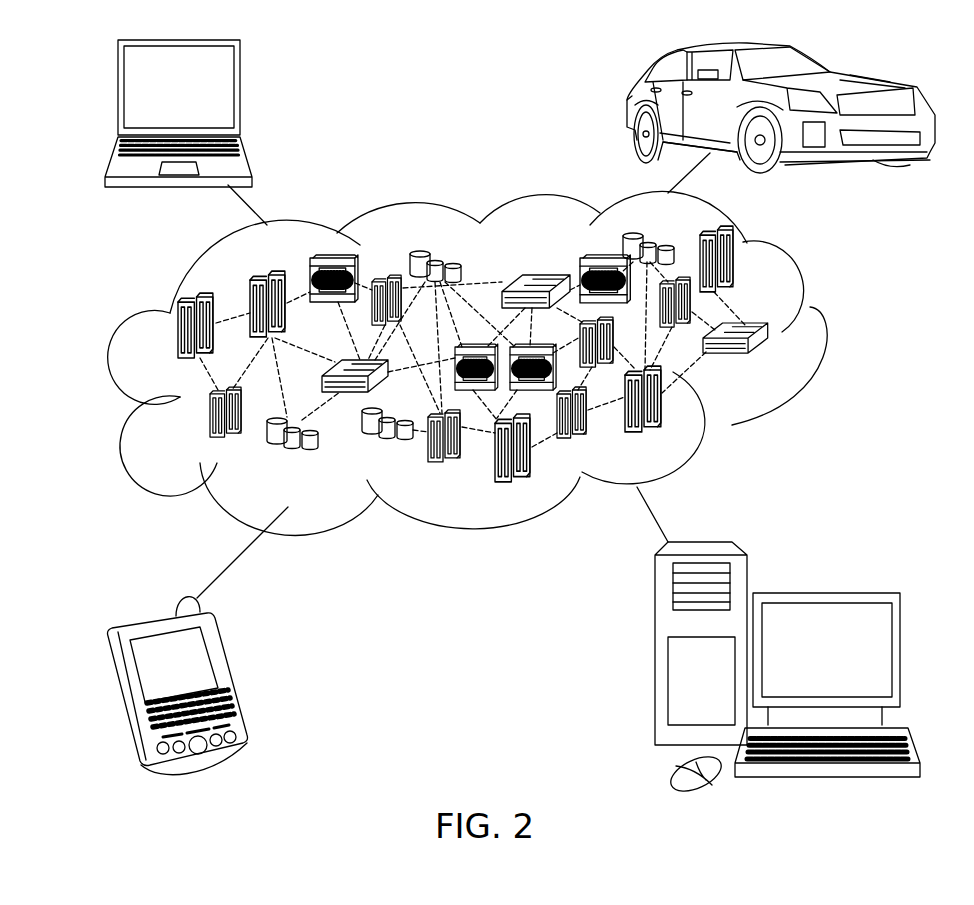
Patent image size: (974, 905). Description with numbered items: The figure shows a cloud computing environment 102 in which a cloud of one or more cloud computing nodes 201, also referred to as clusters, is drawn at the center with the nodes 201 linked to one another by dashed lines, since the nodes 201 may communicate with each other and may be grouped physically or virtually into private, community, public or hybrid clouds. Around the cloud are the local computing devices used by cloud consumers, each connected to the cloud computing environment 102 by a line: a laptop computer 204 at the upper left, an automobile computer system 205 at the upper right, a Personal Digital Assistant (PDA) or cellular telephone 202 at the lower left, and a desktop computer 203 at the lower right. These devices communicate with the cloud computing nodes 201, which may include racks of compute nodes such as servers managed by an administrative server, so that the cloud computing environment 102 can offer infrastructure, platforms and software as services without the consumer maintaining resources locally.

The cloud computing environment 102 is at (825, 338).
The cloud computing nodes 201 is at (782, 365).
The Personal Digital Assistant (PDA) or cellular telephone 202 is at (234, 673).
The desktop computer 203 is at (822, 593).
The laptop computer 204 is at (241, 95).
The automobile computer system 205 is at (631, 108).